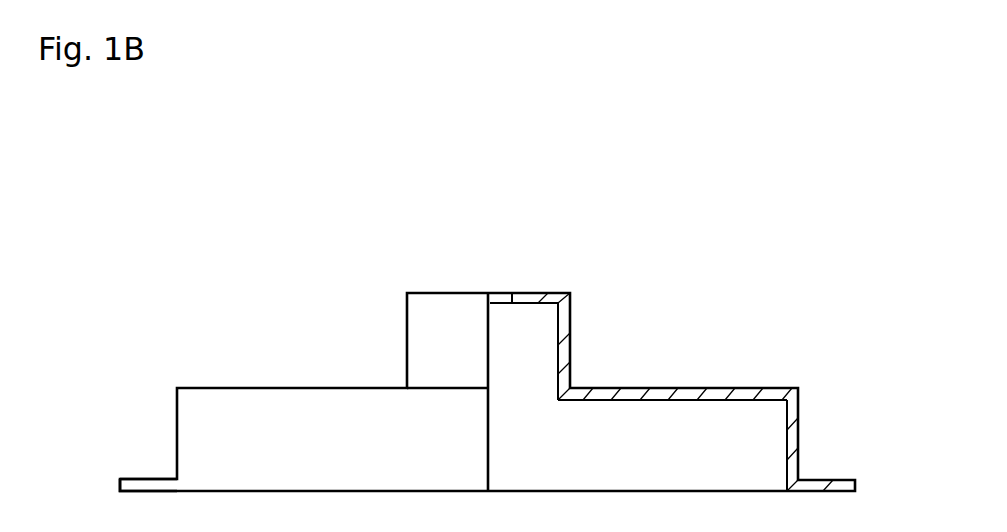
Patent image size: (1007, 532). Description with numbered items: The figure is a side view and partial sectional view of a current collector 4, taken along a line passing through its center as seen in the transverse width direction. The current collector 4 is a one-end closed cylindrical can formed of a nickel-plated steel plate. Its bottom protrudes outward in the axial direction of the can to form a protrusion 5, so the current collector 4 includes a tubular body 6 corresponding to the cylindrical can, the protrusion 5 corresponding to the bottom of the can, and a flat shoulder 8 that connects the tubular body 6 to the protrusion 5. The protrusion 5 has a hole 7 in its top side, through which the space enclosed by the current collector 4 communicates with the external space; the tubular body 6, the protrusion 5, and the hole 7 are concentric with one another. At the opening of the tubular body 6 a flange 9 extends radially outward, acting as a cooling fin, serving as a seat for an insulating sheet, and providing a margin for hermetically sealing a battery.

The current collector 4 is at (795, 193).
The protrusion 5 is at (565, 336).
The tubular body 6 is at (793, 441).
The hole 7 is at (500, 297).
The flat shoulder 8 is at (730, 388).
The flange 9 is at (149, 485).